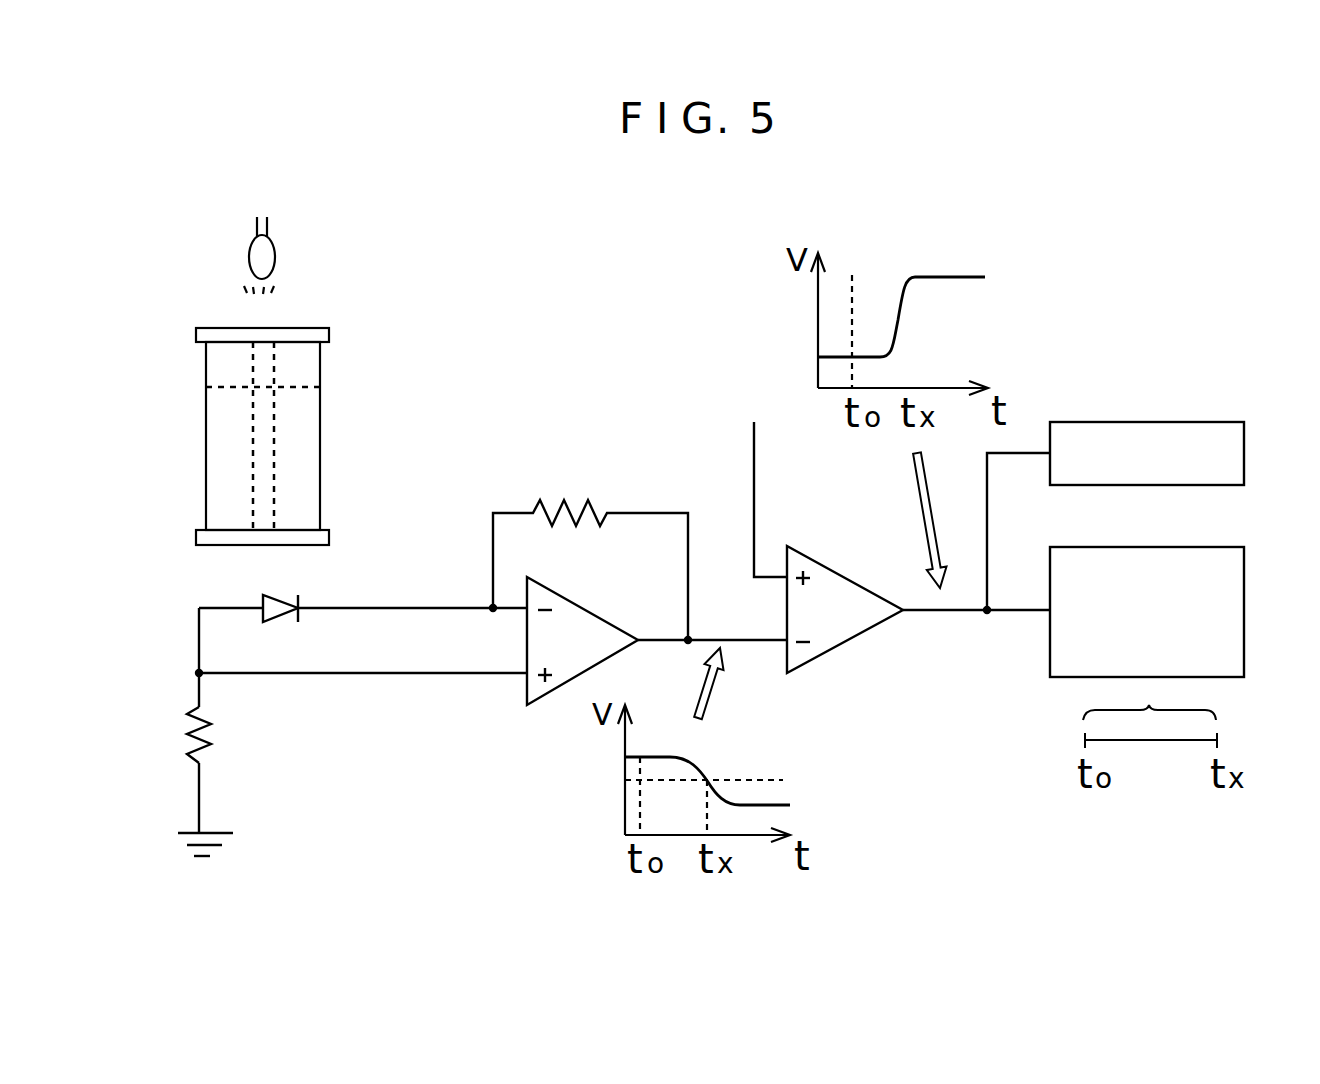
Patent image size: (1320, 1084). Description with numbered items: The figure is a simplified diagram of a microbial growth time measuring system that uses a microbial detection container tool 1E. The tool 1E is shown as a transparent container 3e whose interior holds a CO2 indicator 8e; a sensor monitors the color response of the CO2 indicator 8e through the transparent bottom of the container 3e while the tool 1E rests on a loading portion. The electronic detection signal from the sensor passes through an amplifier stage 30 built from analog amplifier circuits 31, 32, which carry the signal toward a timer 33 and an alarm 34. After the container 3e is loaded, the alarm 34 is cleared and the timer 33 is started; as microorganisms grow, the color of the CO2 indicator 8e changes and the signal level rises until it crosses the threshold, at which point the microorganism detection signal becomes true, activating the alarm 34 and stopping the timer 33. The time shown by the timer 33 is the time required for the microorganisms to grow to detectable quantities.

The microbial detection container tool 1E is at (317, 381).
The CO2 indicator 8e is at (263, 435).
The transparent container 3e is at (320, 455).
The amplifier circuit 30 is at (592, 546).
The analog amplifier circuit 31 is at (562, 690).
The analog amplifier circuit 32 is at (857, 637).
The timer 33 is at (1050, 660).
The alarm 34 is at (1125, 422).